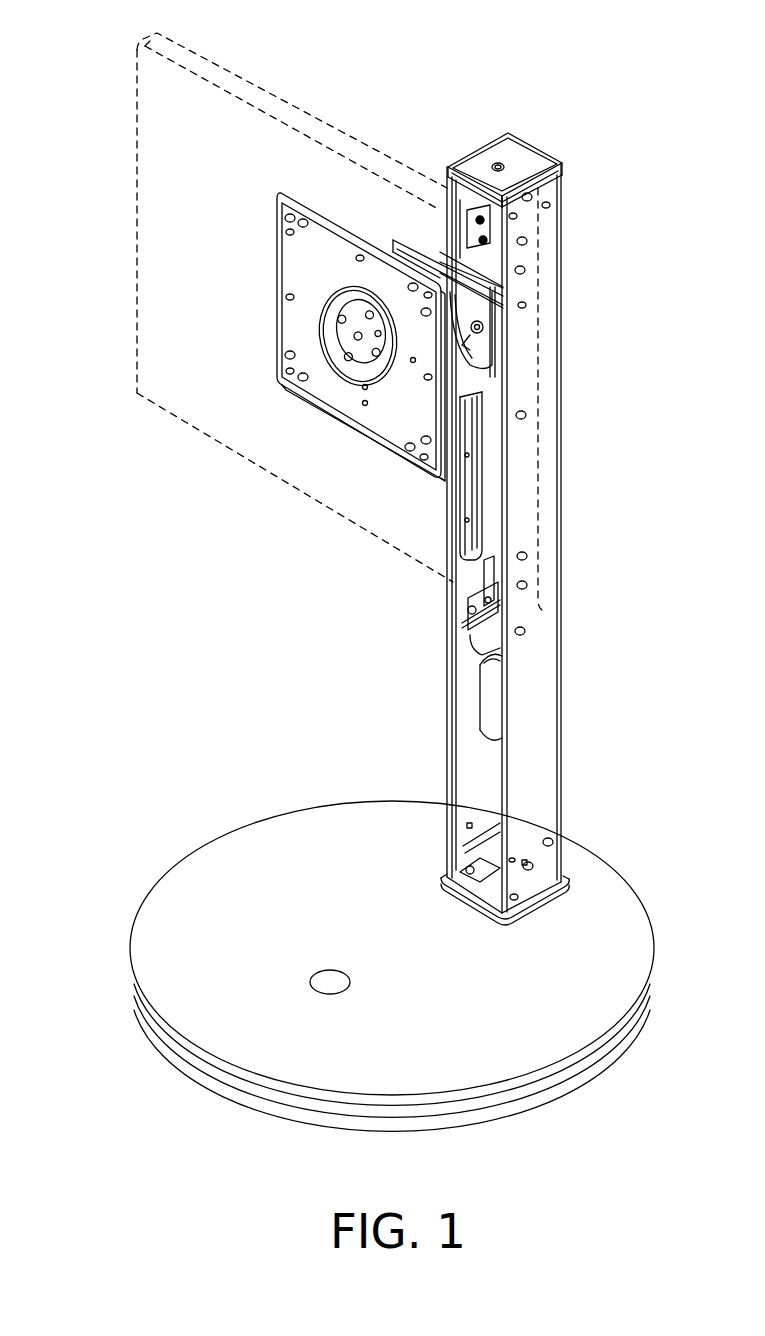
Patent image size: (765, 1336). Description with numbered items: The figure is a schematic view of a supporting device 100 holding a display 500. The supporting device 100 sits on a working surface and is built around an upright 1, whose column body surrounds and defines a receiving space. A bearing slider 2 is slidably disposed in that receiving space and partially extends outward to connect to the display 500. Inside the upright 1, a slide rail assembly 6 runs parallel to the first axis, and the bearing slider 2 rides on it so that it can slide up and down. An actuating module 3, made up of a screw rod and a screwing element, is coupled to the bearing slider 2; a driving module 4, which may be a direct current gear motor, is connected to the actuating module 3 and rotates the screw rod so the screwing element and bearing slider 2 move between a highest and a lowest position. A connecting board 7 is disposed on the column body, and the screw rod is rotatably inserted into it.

The supporting device 100 is at (392, 568).
The display 500 is at (137, 228).
The upright 1 is at (472, 757).
The bearing slider 2 is at (505, 248).
The actuating module 3 is at (497, 556).
The driving module 4 is at (492, 701).
The slide rail assembly 6 is at (465, 500).
The connecting board 7 is at (530, 153).